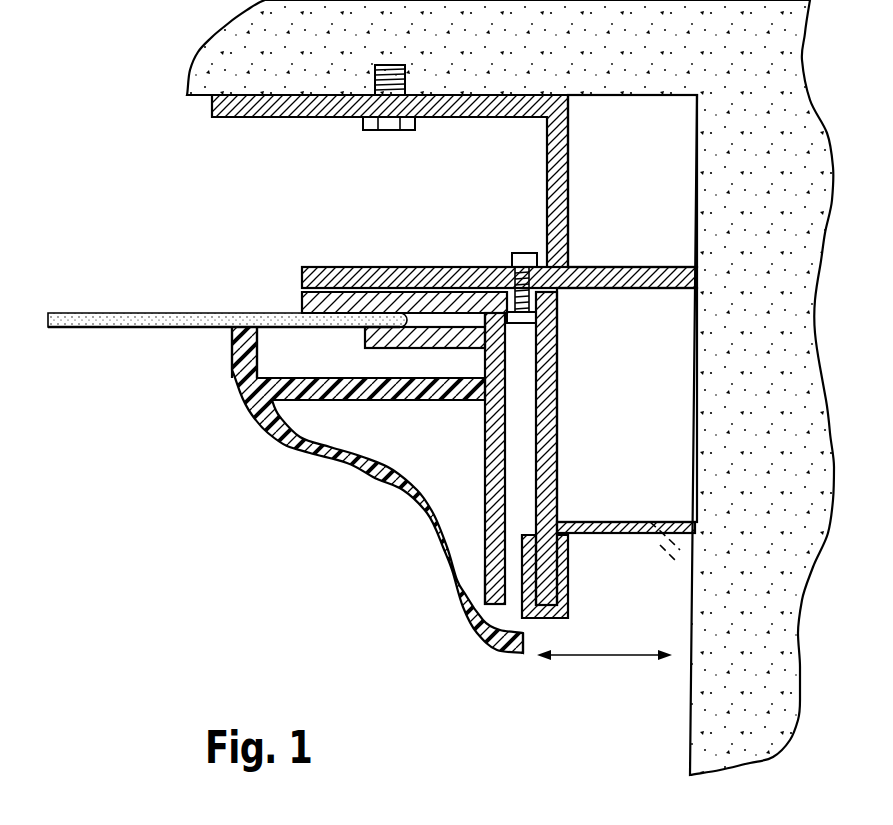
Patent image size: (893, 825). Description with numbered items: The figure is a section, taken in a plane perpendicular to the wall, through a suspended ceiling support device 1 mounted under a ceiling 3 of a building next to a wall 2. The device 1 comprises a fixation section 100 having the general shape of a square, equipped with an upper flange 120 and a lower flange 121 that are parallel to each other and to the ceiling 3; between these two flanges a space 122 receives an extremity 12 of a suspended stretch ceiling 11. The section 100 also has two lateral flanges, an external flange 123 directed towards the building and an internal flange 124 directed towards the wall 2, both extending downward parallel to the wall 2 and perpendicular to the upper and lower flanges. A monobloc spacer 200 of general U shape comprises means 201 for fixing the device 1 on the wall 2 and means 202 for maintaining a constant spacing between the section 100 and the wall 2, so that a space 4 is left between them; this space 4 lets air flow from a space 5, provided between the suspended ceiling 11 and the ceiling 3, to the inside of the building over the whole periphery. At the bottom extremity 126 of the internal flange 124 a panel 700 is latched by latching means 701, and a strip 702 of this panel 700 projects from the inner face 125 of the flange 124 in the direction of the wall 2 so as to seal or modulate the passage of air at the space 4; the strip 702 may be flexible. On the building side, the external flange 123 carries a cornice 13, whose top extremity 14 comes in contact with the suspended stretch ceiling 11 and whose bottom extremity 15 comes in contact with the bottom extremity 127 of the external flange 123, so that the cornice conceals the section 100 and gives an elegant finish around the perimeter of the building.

The suspended ceiling support device 1 is at (285, 459).
The wall 2 is at (696, 385).
The ceiling 3 is at (660, 96).
The space 4 is at (627, 333).
The space 5 is at (381, 280).
The suspended stretch ceiling 11 is at (140, 313).
The extremity of suspended stretch ceiling 12 is at (399, 330).
The cornice 13 is at (261, 417).
The top extremity of cornice 14 is at (238, 340).
The bottom extremity of cornice 15 is at (485, 632).
The fixation section 100 is at (381, 280).
The upper flange 120 is at (377, 302).
The lower flange 121 is at (435, 338).
The space 122 is at (473, 318).
The external lateral flange 123 is at (484, 485).
The internal lateral flange 124 is at (550, 363).
The inner face of lateral flange 125 is at (557, 427).
The bottom extremity of lateral flange 126 is at (549, 594).
The bottom extremity of external lateral flange 127 is at (490, 581).
The spacer 200 is at (645, 162).
The fixing means 201 is at (325, 267).
The spacing maintaining means 202 is at (617, 270).
The panel 700 is at (562, 555).
The latching means 701 is at (555, 619).
The strip 702 is at (600, 522).